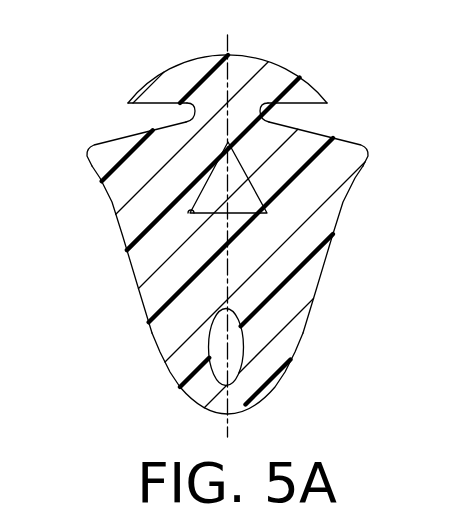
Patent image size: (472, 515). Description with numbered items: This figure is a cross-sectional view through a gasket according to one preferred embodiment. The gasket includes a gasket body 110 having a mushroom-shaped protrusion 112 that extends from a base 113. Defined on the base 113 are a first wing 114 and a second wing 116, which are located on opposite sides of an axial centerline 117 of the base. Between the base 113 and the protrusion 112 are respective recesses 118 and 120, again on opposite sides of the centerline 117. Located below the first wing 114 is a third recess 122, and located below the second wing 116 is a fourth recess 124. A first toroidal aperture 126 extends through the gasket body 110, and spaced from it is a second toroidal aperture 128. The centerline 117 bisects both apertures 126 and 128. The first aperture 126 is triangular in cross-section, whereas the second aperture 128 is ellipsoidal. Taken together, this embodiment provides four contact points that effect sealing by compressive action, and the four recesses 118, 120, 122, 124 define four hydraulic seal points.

The gasket body 110 is at (350, 257).
The mushroom-shaped protrusion 112 is at (273, 72).
The base 113 is at (272, 330).
The first wing 114 is at (100, 148).
The second wing 116 is at (368, 152).
The axial centerline 117 is at (228, 42).
The first recess 118 is at (182, 121).
The second recess 120 is at (283, 117).
The third recess 122 is at (104, 177).
The fourth recess 124 is at (358, 179).
The first toroidal aperture 126 is at (190, 208).
The second toroidal aperture 128 is at (215, 341).